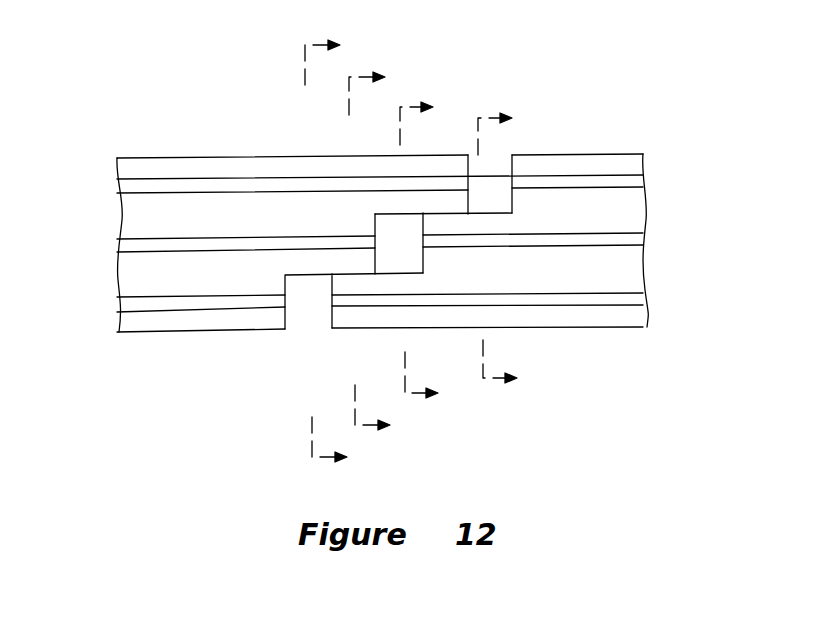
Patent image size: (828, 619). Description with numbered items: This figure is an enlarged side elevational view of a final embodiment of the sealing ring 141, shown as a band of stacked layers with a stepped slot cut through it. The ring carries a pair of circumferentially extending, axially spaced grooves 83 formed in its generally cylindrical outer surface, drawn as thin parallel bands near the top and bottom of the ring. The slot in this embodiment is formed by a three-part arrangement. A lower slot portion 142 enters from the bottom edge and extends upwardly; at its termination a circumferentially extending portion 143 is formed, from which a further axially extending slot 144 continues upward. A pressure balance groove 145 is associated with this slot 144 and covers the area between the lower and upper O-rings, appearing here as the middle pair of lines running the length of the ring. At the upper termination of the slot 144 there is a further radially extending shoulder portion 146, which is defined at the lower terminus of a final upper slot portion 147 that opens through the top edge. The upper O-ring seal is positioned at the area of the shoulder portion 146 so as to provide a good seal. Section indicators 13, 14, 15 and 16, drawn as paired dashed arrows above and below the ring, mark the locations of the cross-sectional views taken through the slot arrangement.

The sealing ring 141 is at (645, 95).
The grooves 83 is at (628, 180).
The pressure balance groove 145 is at (132, 247).
The circumferentially extending portion 143 is at (407, 272).
The axially extending slot 144 is at (376, 213).
The upper slot portion 147 is at (469, 156).
The shoulder portion 146 is at (497, 212).
The lower slot portion 142 is at (290, 297).
The section line for FIG. 13 is at (335, 252).
The section line for FIG. 14 is at (379, 249).
The section line for FIG. 15 is at (428, 249).
The section line for FIG. 16 is at (520, 247).